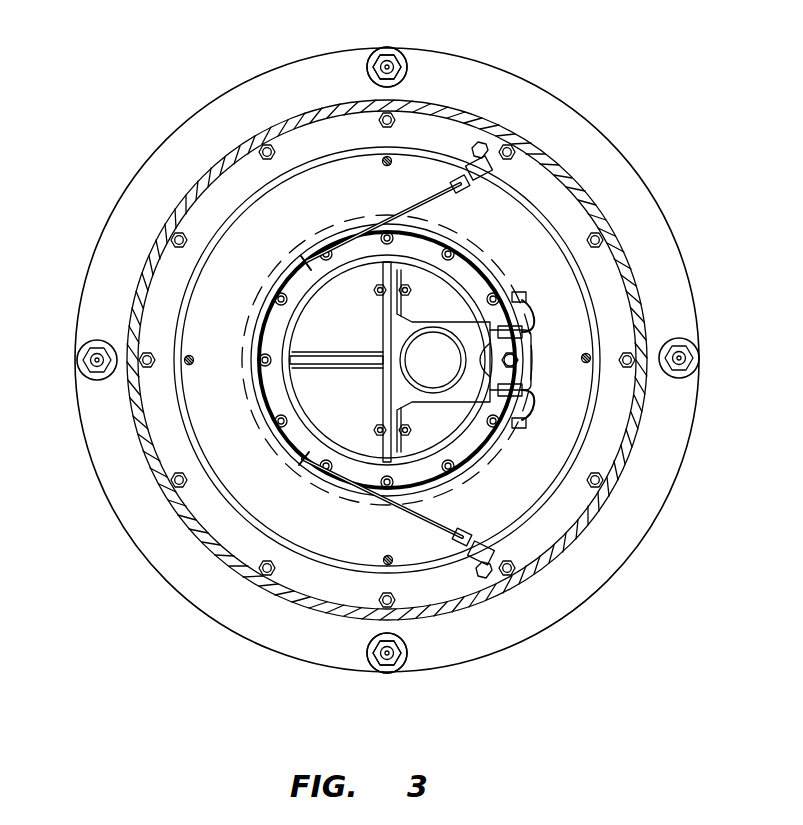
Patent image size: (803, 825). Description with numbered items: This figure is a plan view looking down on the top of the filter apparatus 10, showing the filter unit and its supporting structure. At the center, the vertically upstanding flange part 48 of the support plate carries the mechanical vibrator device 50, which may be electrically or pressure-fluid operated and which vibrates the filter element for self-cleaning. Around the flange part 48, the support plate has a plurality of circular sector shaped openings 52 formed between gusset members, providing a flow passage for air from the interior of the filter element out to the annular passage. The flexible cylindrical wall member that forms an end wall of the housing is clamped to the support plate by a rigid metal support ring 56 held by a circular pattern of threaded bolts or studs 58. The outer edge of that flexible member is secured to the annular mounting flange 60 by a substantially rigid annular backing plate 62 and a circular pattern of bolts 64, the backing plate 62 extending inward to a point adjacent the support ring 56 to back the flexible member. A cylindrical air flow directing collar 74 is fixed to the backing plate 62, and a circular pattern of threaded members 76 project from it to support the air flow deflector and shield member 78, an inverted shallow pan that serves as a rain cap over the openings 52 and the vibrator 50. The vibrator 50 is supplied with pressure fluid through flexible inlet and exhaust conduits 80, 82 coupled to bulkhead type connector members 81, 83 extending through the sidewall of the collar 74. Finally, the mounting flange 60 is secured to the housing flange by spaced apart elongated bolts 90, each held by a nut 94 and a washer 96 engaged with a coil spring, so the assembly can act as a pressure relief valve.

The filter apparatus 10 is at (610, 98).
The vertically upstanding flange part 48 is at (385, 330).
The mechanical vibrator device 50 is at (445, 370).
The circular sector shaped openings 52 is at (448, 290).
The rigid metal support ring 56 is at (470, 268).
The threaded bolts or studs 58 is at (500, 296).
The annular mounting flange 60 is at (675, 255).
The annular backing plate 62 is at (235, 540).
The bolts 64 is at (590, 232).
The cylindrical air flow directing collar 74 is at (227, 222).
The threaded members 76 is at (384, 163).
The air flow deflector and shield member 78 is at (630, 437).
The flexible inlet conduit 80 is at (430, 193).
The bulkhead type connector member 81 is at (478, 180).
The flexible exhaust conduit 82 is at (445, 530).
The bulkhead type connector member 83 is at (505, 545).
The elongated bolts 90 is at (395, 50).
The nut 94 is at (368, 67).
The washer 96 is at (404, 70).